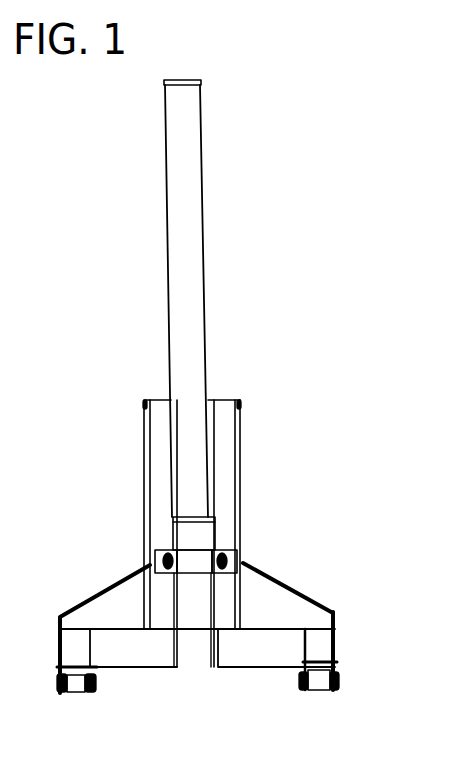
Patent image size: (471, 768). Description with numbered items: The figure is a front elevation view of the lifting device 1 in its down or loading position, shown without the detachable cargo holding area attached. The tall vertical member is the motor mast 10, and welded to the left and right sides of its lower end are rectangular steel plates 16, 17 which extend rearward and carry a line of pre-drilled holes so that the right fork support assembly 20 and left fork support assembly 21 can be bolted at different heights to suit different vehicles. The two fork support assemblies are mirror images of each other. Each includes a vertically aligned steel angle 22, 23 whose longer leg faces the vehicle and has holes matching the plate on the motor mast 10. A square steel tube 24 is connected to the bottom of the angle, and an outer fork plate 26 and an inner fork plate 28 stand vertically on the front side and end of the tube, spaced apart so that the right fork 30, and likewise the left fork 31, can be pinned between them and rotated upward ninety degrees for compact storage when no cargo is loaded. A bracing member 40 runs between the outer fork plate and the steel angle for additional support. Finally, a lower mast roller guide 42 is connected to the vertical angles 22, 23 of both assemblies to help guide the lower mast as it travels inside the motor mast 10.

The lifting device 1 is at (207, 82).
The motor mast 10 is at (180, 100).
The rectangular steel plate 16 is at (211, 400).
The rectangular steel plate 17 is at (171, 400).
The steel angle 22 is at (227, 443).
The steel angle 23 is at (158, 445).
The lower mast roller guide 42 is at (203, 574).
The square steel tube 24 is at (248, 653).
The left fork support assembly 21 is at (88, 618).
The bracing member 40 is at (267, 565).
The right fork support assembly 20 is at (313, 612).
The inner fork plate 28 is at (340, 627).
The outer fork plate 26 is at (297, 630).
The right fork 30 is at (317, 683).
The left fork 31 is at (77, 693).